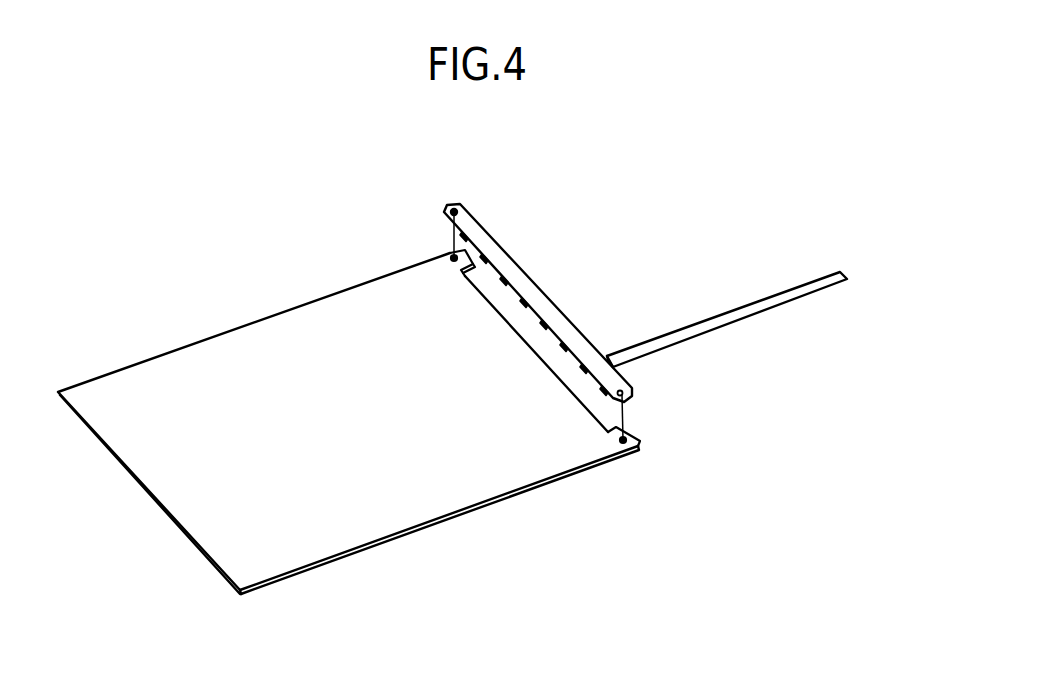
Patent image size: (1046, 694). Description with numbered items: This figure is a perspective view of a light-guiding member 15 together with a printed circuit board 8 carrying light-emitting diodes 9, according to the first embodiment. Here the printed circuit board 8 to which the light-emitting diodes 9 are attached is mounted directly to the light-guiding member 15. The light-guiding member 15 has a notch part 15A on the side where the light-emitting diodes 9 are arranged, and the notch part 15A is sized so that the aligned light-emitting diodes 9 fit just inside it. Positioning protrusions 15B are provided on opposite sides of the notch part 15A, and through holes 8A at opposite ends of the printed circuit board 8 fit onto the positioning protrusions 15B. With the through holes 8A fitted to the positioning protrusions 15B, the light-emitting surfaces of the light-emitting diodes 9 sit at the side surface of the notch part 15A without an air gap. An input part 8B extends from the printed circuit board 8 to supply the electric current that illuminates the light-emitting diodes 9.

The light-guiding member 15 is at (170, 378).
The notch part 15A is at (500, 303).
The positioning protrusions 15B is at (628, 438).
The printed circuit board 8 is at (493, 255).
The through holes 8A is at (626, 391).
The input part 8B is at (712, 320).
The light-emitting diodes 9 is at (524, 304).